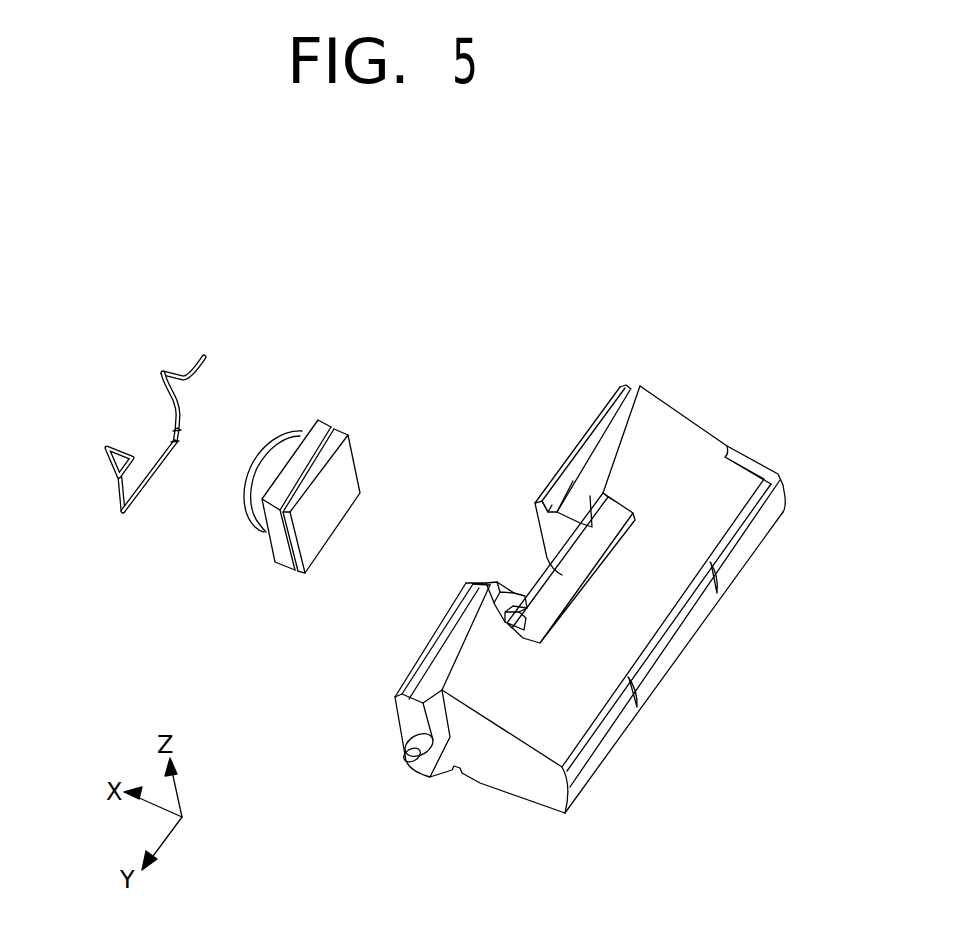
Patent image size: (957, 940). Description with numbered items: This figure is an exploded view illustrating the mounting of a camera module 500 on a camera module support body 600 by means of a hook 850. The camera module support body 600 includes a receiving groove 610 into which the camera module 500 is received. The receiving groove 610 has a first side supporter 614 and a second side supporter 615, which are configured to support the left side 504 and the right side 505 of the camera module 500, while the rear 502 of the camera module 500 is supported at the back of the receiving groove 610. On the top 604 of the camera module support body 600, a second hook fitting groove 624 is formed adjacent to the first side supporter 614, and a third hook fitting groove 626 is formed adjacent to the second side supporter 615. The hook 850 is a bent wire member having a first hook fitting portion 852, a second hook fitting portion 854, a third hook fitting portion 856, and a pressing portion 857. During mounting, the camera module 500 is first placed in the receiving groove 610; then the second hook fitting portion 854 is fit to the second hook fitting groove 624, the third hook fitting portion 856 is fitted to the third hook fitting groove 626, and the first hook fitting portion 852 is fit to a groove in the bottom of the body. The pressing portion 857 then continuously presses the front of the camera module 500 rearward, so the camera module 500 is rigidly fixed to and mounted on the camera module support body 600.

The camera module 500 is at (317, 514).
The rear of the camera module 502 is at (347, 477).
The left side of the camera module 504 is at (328, 418).
The right side of the camera module 505 is at (278, 556).
The camera module support body 600 is at (548, 612).
The top of the camera module support body 604 is at (495, 678).
The receiving groove 610 is at (530, 577).
The first side supporter 614 is at (563, 531).
The second side supporter 615 is at (503, 582).
The second hook fitting groove 624 is at (597, 512).
The third hook fitting groove 626 is at (515, 628).
The hook 850 is at (144, 461).
The first hook fitting portion 852 is at (155, 472).
The second hook fitting portion 854 is at (196, 353).
The third hook fitting portion 856 is at (113, 474).
The pressing portion 857 is at (182, 405).